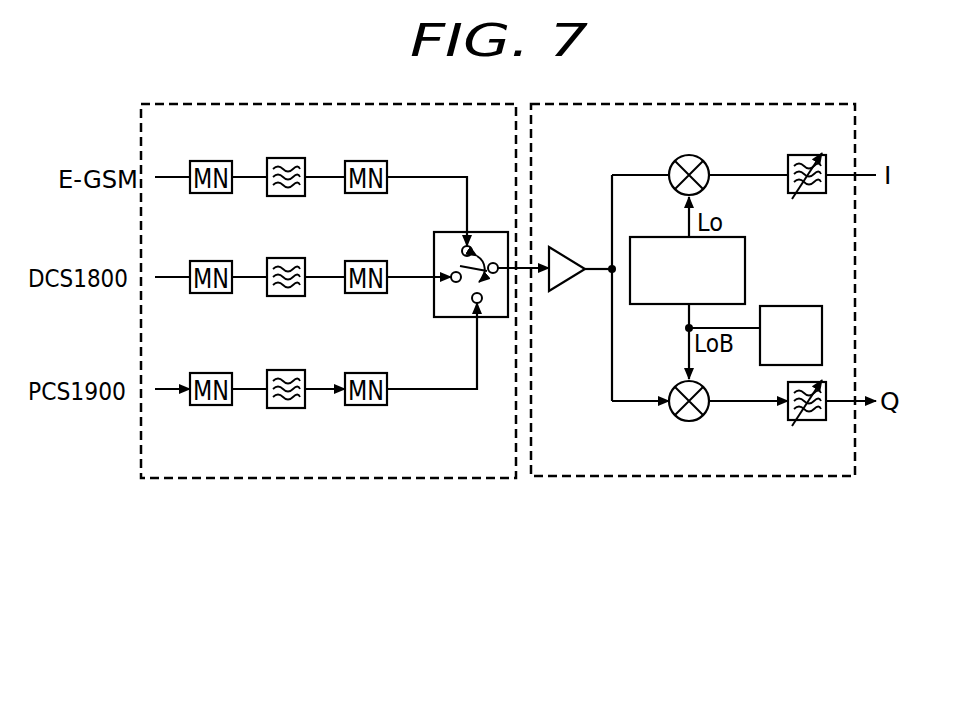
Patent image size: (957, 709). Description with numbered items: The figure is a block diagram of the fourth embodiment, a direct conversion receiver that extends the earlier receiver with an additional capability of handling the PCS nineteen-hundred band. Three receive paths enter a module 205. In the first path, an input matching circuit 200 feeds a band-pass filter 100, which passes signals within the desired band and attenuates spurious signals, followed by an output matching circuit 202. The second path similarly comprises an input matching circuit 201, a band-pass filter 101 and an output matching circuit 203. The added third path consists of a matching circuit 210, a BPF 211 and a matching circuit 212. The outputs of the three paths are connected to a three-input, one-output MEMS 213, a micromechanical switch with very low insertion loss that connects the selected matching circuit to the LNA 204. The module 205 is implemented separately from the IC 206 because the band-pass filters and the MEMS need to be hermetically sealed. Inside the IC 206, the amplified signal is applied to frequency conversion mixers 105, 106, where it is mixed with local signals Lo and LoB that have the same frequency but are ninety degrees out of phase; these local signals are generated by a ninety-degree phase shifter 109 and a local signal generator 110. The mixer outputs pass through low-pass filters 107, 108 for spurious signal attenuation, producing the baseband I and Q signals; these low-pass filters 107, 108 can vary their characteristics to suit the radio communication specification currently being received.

The band-pass filter 100 is at (286, 159).
The band-pass filter 101 is at (287, 297).
The frequency conversion mixer 105 is at (687, 156).
The frequency conversion mixer 106 is at (680, 422).
The low-pass filter 107 is at (802, 160).
The low-pass filter 108 is at (811, 421).
The 90-degree phase shifter 109 is at (652, 305).
The local signal generator 110 is at (797, 305).
The input matching circuit 200 is at (210, 162).
The input matching circuit 201 is at (211, 294).
The output matching circuit 202 is at (366, 162).
The output matching circuit 203 is at (367, 294).
The LNA 204 is at (569, 290).
The module 205 is at (450, 478).
The IC 206 is at (722, 477).
The matching circuit 210 is at (211, 406).
The BPF 211 is at (287, 409).
The matching circuit 212 is at (367, 406).
The 3-input, 1-output MEMS 213 is at (485, 230).